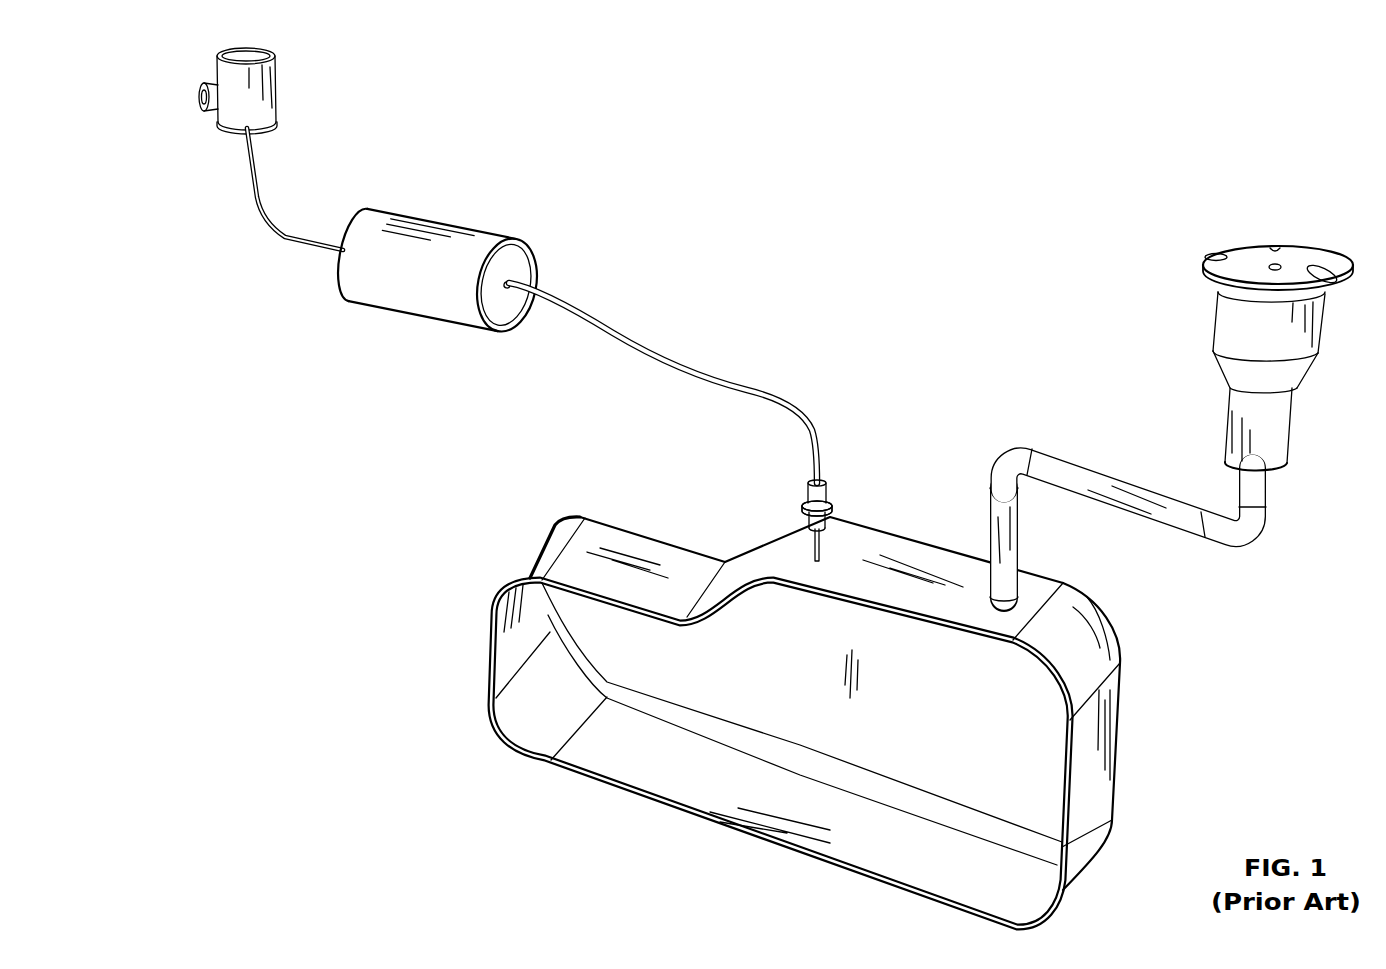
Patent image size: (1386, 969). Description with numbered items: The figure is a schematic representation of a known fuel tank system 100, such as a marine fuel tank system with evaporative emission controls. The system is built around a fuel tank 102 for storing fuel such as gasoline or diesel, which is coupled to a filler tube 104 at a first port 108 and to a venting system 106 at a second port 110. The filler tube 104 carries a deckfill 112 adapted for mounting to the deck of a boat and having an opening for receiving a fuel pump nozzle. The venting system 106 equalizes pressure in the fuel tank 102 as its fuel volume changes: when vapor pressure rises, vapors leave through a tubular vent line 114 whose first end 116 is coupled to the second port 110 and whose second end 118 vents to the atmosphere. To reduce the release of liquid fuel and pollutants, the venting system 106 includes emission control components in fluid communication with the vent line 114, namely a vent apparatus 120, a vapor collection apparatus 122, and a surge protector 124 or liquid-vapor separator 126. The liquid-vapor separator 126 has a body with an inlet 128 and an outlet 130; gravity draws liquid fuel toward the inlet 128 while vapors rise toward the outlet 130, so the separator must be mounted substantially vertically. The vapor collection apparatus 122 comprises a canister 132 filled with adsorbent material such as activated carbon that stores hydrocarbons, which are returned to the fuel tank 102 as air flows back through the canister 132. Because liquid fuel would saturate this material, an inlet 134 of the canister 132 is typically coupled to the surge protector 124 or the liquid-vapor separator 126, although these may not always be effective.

The fuel tank system 100 is at (979, 138).
The fuel tank 102 is at (533, 550).
The filler tube 104 is at (1119, 473).
The venting system 106 is at (602, 268).
The first port 108 is at (1025, 587).
The second port 110 is at (820, 552).
The deckfill 112 is at (1213, 321).
The tubular vent line 114 is at (653, 347).
The first end 116 is at (823, 553).
The second end 118 is at (260, 162).
The vent apparatus 120 is at (227, 73).
The vapor collection apparatus 122 is at (437, 286).
The surge protector 124 is at (800, 502).
The liquid-vapor separator 126 is at (817, 508).
The inlet 128 is at (830, 522).
The outlet 130 is at (830, 485).
The canister 132 is at (383, 297).
The inlet 134 is at (511, 292).